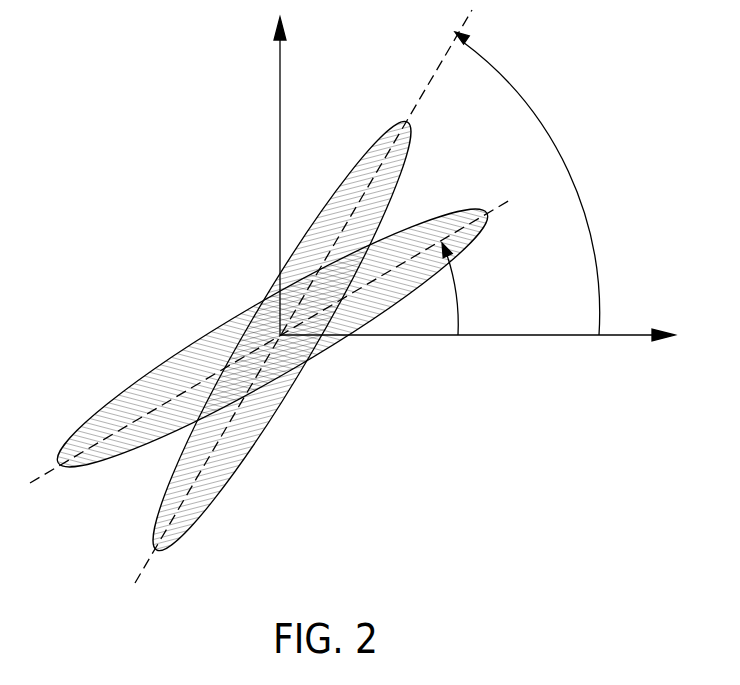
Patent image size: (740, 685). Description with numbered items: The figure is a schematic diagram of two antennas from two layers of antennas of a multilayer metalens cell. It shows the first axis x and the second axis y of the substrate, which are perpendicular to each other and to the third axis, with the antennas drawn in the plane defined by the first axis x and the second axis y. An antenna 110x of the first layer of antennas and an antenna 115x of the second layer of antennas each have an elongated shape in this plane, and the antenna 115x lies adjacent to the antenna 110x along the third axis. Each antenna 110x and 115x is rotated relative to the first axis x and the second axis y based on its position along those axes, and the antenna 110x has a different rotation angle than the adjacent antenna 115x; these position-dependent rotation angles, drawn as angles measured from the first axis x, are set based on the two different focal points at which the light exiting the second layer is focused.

The antenna of the first layer of antennas 110x is at (240, 479).
The antenna of the second layer of antennas 115x is at (113, 399).
The first axis x is at (622, 337).
The second axis y is at (280, 67).